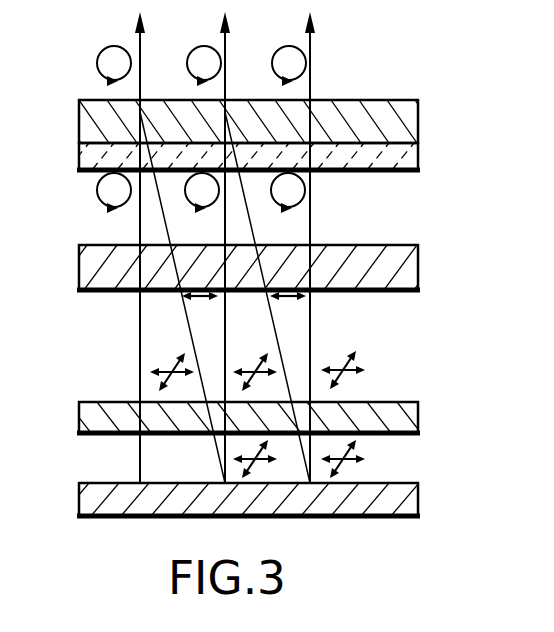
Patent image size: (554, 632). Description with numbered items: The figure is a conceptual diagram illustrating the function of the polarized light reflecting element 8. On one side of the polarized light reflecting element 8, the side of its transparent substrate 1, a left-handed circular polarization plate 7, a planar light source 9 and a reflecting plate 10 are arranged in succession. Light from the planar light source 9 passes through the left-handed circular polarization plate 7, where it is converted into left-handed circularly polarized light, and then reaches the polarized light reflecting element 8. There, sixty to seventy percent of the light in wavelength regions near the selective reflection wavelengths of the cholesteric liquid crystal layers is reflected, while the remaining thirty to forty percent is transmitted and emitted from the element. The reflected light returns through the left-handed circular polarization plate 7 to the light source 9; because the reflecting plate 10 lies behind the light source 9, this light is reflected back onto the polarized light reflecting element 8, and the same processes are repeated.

The transparent substrate 1 is at (432, 156).
The left-handed circular polarization plate 7 is at (82, 268).
The polarized light reflecting element 8 is at (266, 136).
The planar light source 9 is at (82, 417).
The reflecting plate 10 is at (82, 500).